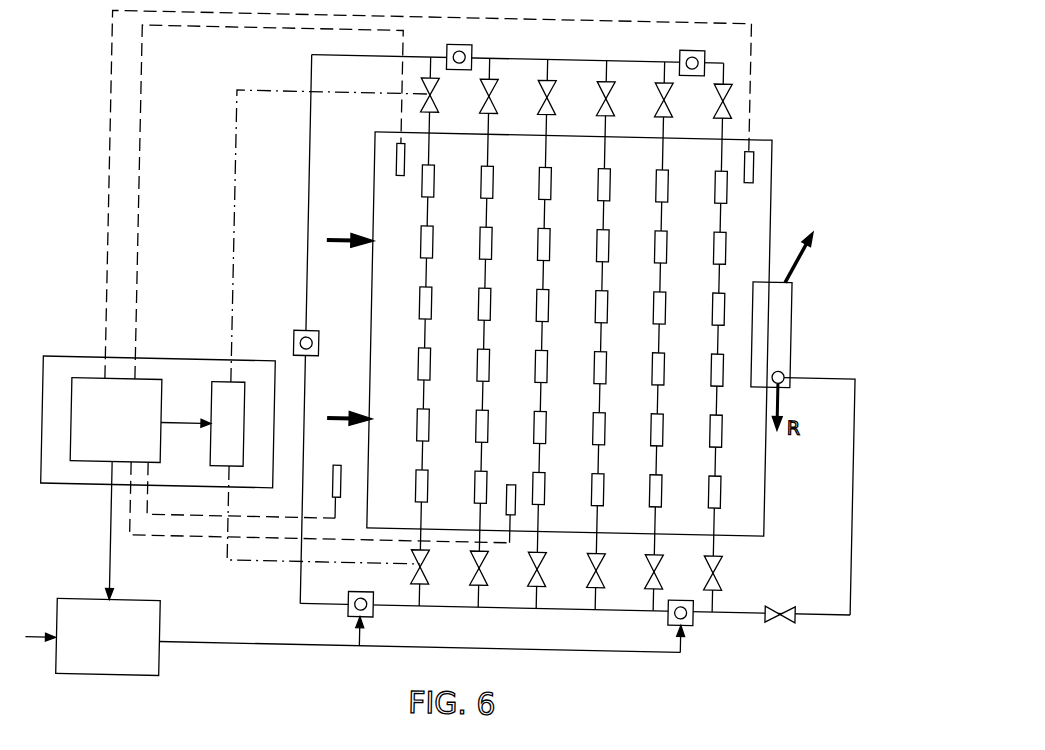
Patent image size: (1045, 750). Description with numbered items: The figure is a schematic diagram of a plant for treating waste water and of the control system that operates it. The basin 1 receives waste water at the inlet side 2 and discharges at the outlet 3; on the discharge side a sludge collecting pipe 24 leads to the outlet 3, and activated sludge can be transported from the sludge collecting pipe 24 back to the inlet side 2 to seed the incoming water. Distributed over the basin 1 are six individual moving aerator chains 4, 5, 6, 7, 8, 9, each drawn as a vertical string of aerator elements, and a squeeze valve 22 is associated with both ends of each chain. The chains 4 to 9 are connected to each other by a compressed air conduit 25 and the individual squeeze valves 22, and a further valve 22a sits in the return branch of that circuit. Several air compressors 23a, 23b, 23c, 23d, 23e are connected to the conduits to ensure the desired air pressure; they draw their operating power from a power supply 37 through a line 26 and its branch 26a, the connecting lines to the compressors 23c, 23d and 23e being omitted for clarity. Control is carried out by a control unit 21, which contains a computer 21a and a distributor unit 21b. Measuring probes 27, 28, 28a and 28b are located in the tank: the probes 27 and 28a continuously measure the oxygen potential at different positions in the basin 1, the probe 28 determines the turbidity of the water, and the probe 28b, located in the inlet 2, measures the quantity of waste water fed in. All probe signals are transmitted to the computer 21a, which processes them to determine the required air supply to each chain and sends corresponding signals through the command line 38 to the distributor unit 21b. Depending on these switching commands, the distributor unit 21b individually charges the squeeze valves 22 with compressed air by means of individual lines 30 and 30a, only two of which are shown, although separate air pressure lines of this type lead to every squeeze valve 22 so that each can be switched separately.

The basin 1 is at (752, 225).
The inlet side 2 is at (338, 239).
The outlet 3 is at (796, 257).
The aerator chain 4 is at (426, 214).
The aerator chain 5 is at (486, 214).
The aerator chain 6 is at (545, 213).
The aerator chain 7 is at (603, 213).
The aerator chain 8 is at (661, 213).
The aerator chain 9 is at (716, 214).
The control unit 21 is at (58, 358).
The computer 21a is at (134, 439).
The distributor unit 21b is at (221, 386).
The squeeze valve 22 is at (489, 98).
The valve 22a is at (794, 617).
The air compressor 23a is at (673, 618).
The air compressor 23b is at (353, 616).
The air compressor 23c is at (297, 335).
The air compressor 23d is at (466, 51).
The air compressor 23e is at (674, 50).
The sludge collecting pipe 24 is at (791, 329).
The compressed air conduit 25 is at (856, 505).
The line 26 is at (247, 649).
The line 26a is at (632, 650).
The measuring probe 27 is at (750, 160).
The measuring probe 28 is at (512, 542).
The measuring probe 28a is at (393, 161).
The measuring probe 28b is at (339, 469).
The line 30 is at (229, 151).
The line 30a is at (272, 568).
The power supply 37 is at (130, 660).
The command line 38 is at (182, 425).